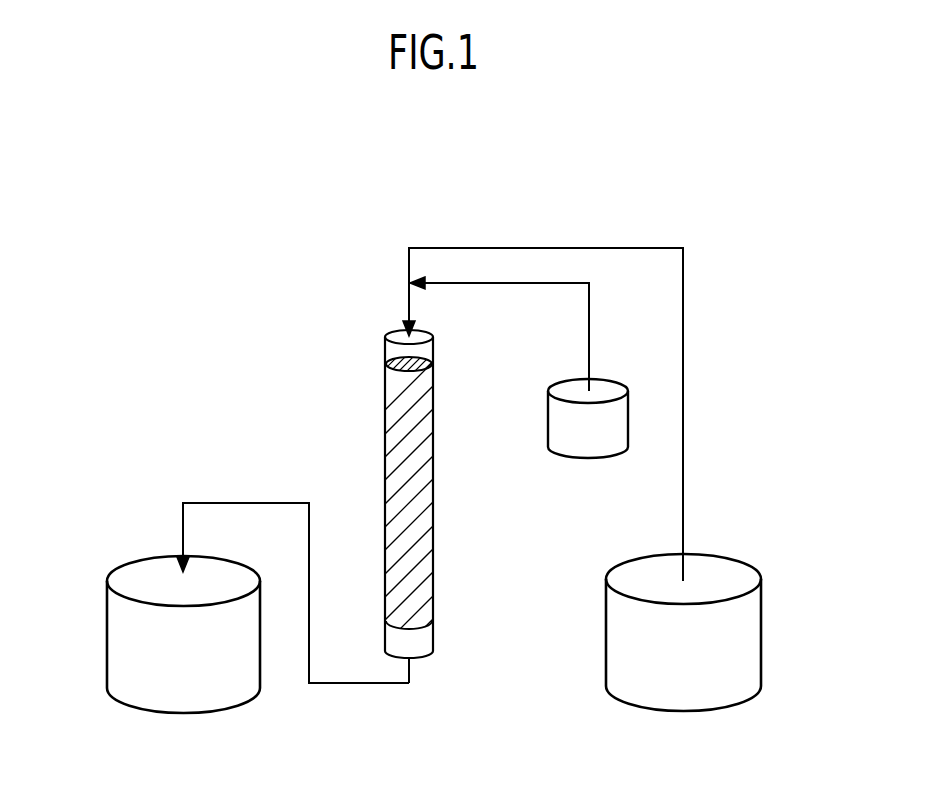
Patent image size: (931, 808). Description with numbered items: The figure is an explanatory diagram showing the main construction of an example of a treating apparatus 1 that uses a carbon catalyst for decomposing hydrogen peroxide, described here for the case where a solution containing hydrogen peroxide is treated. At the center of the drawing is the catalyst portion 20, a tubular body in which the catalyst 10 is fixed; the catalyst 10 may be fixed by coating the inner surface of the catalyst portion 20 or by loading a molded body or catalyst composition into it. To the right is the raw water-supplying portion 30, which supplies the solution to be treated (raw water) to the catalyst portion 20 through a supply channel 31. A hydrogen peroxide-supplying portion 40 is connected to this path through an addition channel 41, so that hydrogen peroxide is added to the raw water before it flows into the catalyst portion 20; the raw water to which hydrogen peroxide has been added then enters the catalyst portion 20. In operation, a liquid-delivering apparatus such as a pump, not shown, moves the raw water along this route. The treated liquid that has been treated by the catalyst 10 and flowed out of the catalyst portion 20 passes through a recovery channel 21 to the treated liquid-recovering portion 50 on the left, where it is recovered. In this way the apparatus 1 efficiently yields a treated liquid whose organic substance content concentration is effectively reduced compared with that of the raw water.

The apparatus 1 is at (417, 189).
The catalyst 10 is at (392, 441).
The catalyst portion 20 is at (392, 350).
The recovery channel 21 is at (243, 499).
The raw water-supplying portion 30 is at (748, 642).
The supply channel 31 is at (684, 410).
The hydrogen peroxide-supplying portion 40 is at (590, 447).
The addition channel 41 is at (501, 285).
The treated liquid-recovering portion 50 is at (117, 645).